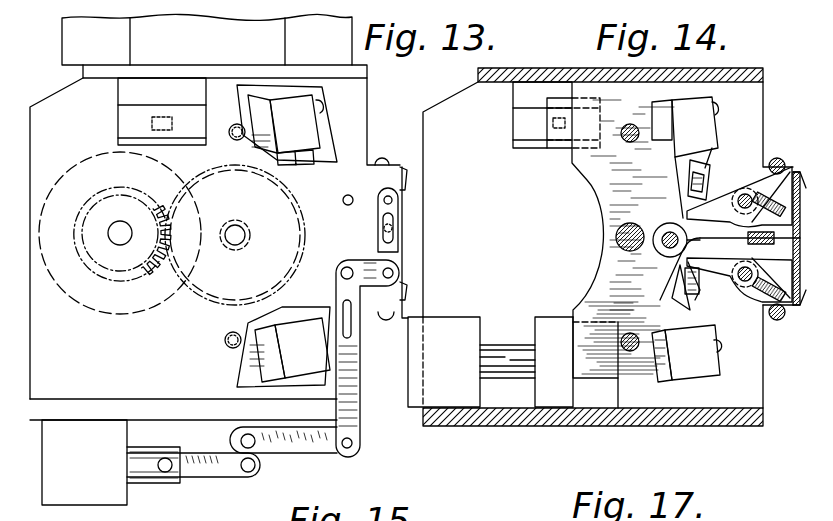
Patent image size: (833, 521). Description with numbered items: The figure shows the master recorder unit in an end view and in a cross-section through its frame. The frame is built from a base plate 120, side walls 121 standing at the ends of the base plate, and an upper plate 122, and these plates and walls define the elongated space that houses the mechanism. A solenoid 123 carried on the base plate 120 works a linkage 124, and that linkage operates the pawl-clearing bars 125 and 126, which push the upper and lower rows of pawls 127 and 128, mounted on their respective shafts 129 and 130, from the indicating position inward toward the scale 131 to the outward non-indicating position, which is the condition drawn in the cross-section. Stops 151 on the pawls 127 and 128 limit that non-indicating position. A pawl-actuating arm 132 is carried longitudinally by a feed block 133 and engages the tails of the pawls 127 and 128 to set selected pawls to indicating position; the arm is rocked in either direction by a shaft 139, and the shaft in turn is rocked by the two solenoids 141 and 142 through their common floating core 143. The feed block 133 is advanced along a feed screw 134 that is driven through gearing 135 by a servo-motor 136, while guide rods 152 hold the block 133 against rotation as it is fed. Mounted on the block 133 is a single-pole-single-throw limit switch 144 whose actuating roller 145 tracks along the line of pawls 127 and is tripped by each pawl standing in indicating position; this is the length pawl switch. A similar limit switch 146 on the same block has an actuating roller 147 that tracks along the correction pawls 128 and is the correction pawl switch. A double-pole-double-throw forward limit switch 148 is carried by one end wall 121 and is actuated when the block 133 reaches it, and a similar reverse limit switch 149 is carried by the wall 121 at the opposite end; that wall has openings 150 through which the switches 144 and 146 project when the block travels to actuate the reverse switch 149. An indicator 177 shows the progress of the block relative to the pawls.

In FIG. 13, the base plate 120 is at (188, 410).
In FIG. 14, the base plate 120 is at (512, 420).
In FIG. 13, the side walls 121 is at (43, 102).
In FIG. 14, the side walls 121 is at (442, 100).
In FIG. 13, the upper plate 122 is at (214, 54).
In FIG. 14, the upper plate 122 is at (748, 68).
In FIG. 13, the solenoid 123 is at (84, 462).
In FIG. 13, the linkage 124 is at (370, 413).
In FIG. 14, the pawl-clearing bar 125 is at (778, 205).
In FIG. 14, the pawl-clearing bar 126 is at (790, 270).
In FIG. 14, the pawls 127 is at (733, 188).
In FIG. 14, the pawls 128 is at (757, 288).
In FIG. 13, the shaft 129 is at (343, 205).
In FIG. 14, the shaft 129 is at (738, 207).
In FIG. 14, the shaft 130 is at (738, 273).
In FIG. 13, the scale 131 is at (400, 190).
In FIG. 14, the scale 131 is at (795, 232).
In FIG. 14, the pawl-actuating arm 132 is at (686, 226).
In FIG. 13, the feed block 133 is at (236, 348).
In FIG. 14, the feed block 133 is at (600, 279).
In FIG. 13, the feed screw 134 is at (238, 230).
In FIG. 14, the feed screw 134 is at (614, 233).
In FIG. 13, the gearing 135 is at (163, 264).
In FIG. 13, the servo-motor 136 is at (98, 316).
In FIG. 14, the shaft 139 is at (660, 257).
In FIG. 14, the solenoid 141 is at (466, 325).
In FIG. 14, the solenoid 142 is at (556, 328).
In FIG. 14, the floating core 143 is at (511, 352).
In FIG. 13, the limit switch 144 is at (298, 142).
In FIG. 14, the limit switch 144 is at (700, 110).
In FIG. 14, the actuating roller 145 is at (665, 176).
In FIG. 13, the limit switch 146 is at (290, 332).
In FIG. 14, the limit switch 146 is at (700, 378).
In FIG. 14, the actuating roller 147 is at (688, 300).
In FIG. 14, the forward limit switch 148 is at (518, 126).
In FIG. 13, the reverse limit switch 149 is at (128, 122).
In FIG. 13, the openings 150 is at (326, 118).
In FIG. 14, the stops 151 is at (779, 158).
In FIG. 14, the guide rods 152 is at (632, 124).
In FIG. 14, the indicator 177 is at (796, 246).